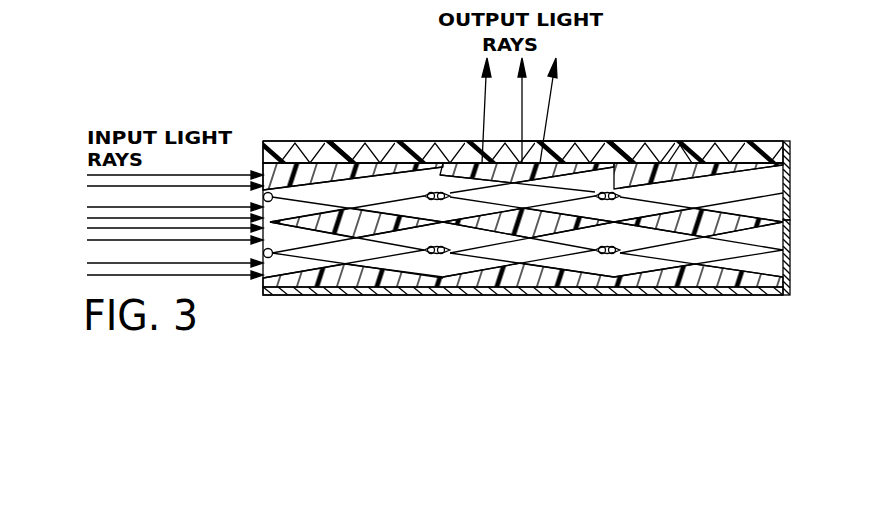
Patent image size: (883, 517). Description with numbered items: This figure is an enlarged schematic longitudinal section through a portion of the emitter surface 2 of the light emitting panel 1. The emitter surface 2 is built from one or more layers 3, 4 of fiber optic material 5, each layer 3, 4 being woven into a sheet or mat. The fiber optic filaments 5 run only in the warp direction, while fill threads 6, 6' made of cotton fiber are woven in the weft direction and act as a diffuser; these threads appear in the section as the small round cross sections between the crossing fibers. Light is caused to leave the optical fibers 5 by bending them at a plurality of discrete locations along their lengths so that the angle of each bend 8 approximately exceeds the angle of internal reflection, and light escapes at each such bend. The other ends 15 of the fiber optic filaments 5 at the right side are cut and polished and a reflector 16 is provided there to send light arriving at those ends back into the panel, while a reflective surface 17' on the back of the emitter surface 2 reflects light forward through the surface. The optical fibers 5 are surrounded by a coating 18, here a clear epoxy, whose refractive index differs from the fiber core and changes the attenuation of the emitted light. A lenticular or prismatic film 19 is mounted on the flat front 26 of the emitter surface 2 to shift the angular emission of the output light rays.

The light emitting panel 1 is at (281, 128).
The emitter surface 2 is at (603, 129).
The layer 3 is at (677, 158).
The layer 4 is at (635, 282).
The fiber optic filament 5 is at (748, 180).
The fill thread 6 is at (442, 177).
The fill thread 6' is at (433, 140).
The bend 8 is at (459, 150).
The other ends 15 is at (790, 172).
The reflector 16 is at (790, 236).
The base substrate 17' is at (523, 306).
The coating 18 is at (572, 141).
The lenticular or prismatic film 19 is at (653, 141).
The flat front 26 is at (339, 141).